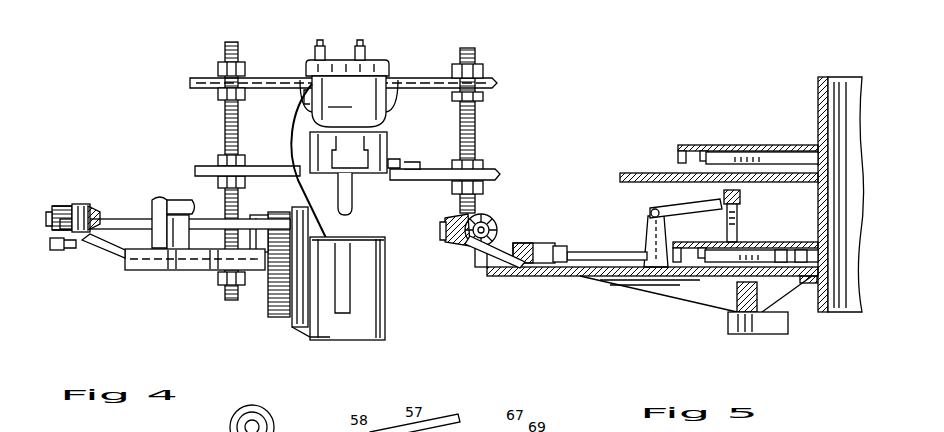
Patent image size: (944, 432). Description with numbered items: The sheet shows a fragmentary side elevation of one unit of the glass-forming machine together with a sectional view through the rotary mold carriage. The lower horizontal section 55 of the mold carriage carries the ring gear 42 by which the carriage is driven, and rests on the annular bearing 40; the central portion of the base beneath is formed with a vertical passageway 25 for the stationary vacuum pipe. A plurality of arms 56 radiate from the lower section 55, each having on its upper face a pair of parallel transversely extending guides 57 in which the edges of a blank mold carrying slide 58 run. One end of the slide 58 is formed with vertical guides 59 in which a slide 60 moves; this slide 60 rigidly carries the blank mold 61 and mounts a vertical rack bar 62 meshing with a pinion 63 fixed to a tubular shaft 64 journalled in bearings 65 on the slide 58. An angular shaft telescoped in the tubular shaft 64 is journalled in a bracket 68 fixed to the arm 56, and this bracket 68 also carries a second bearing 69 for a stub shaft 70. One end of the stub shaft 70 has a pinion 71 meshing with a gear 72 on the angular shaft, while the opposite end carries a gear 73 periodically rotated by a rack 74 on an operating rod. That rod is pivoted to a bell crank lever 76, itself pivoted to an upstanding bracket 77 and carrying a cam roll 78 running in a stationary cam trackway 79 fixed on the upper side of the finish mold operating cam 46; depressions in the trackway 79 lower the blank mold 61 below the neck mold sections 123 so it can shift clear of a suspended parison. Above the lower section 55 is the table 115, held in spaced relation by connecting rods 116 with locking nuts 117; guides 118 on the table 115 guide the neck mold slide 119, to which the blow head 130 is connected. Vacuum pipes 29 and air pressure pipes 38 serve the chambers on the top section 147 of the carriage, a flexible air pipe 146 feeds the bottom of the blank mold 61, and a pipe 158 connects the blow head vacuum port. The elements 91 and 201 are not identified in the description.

In FIG. 4, the individual vacuum pipe 29 is at (320, 40).
In FIG. 4, the radiating pipe 38 is at (362, 40).
In FIG. 4, the top section of the mold carriage 147 is at (195, 88).
In FIG. 4, the locking or spacing nut 117 is at (242, 94).
In FIG. 4, the connecting rod 116 is at (238, 128).
In FIG. 4, the pipe 158 is at (304, 98).
In FIG. 4, the flexible air pipe 146 is at (306, 118).
In FIG. 4, the blow head 130 is at (349, 93).
In FIG. 4, the neck mold slide 119 is at (390, 158).
In FIG. 4, the guide 118 is at (414, 162).
In FIG. 4, the table or intermediate section 115 is at (437, 180).
In FIG. 5, the table or intermediate section 115 is at (650, 172).
In FIG. 4, the vertical guide 59 is at (300, 182).
In FIG. 4, the neck mold section 123 is at (362, 172).
In FIG. 4, the blank mold 61 is at (344, 340).
In FIG. 4, the vertical rack bar 62 is at (268, 294).
In FIG. 4, the slide 60 is at (302, 340).
In FIG. 4, the pinion 63 is at (272, 212).
In FIG. 4, the tubular shaft 64 is at (200, 218).
In FIG. 4, the bearing 65 is at (250, 216).
In FIG. 4, the arm 56 is at (148, 270).
In FIG. 4, the guide 57 is at (182, 270).
In FIG. 4, the blank mold carrying slide 58 is at (214, 270).
In FIG. 4, the gear 72 is at (84, 208).
In FIG. 5, the gear 72 is at (452, 246).
In FIG. 4, the second bearing 69 is at (76, 206).
In FIG. 4, the pinion 71 is at (100, 214).
In FIG. 5, the pinion 71 is at (478, 250).
In FIG. 4, the gear 73 is at (50, 210).
In FIG. 4, the rack 74 is at (54, 250).
In FIG. 4, the bracket 68 is at (110, 256).
In FIG. 4, the dial 201 is at (274, 420).
In FIG. 5, the upstanding bracket 77 is at (648, 222).
In FIG. 5, the bell crank lever 76 is at (676, 208).
In FIG. 5, the stationary cam trackway 79 is at (740, 196).
In FIG. 5, the cam roll 78 is at (740, 208).
In FIG. 5, the finish mold operating cam 46 is at (684, 248).
In FIG. 5, the stop 91 is at (786, 250).
In FIG. 5, the lower horizontal section of the mold carriage 55 is at (570, 277).
In FIG. 5, the ring gear 42 is at (730, 320).
In FIG. 5, the annular bearing 40 is at (745, 333).
In FIG. 5, the vertical passageway 25 is at (600, 244).
In FIG. 5, the stub shaft 70 is at (492, 226).